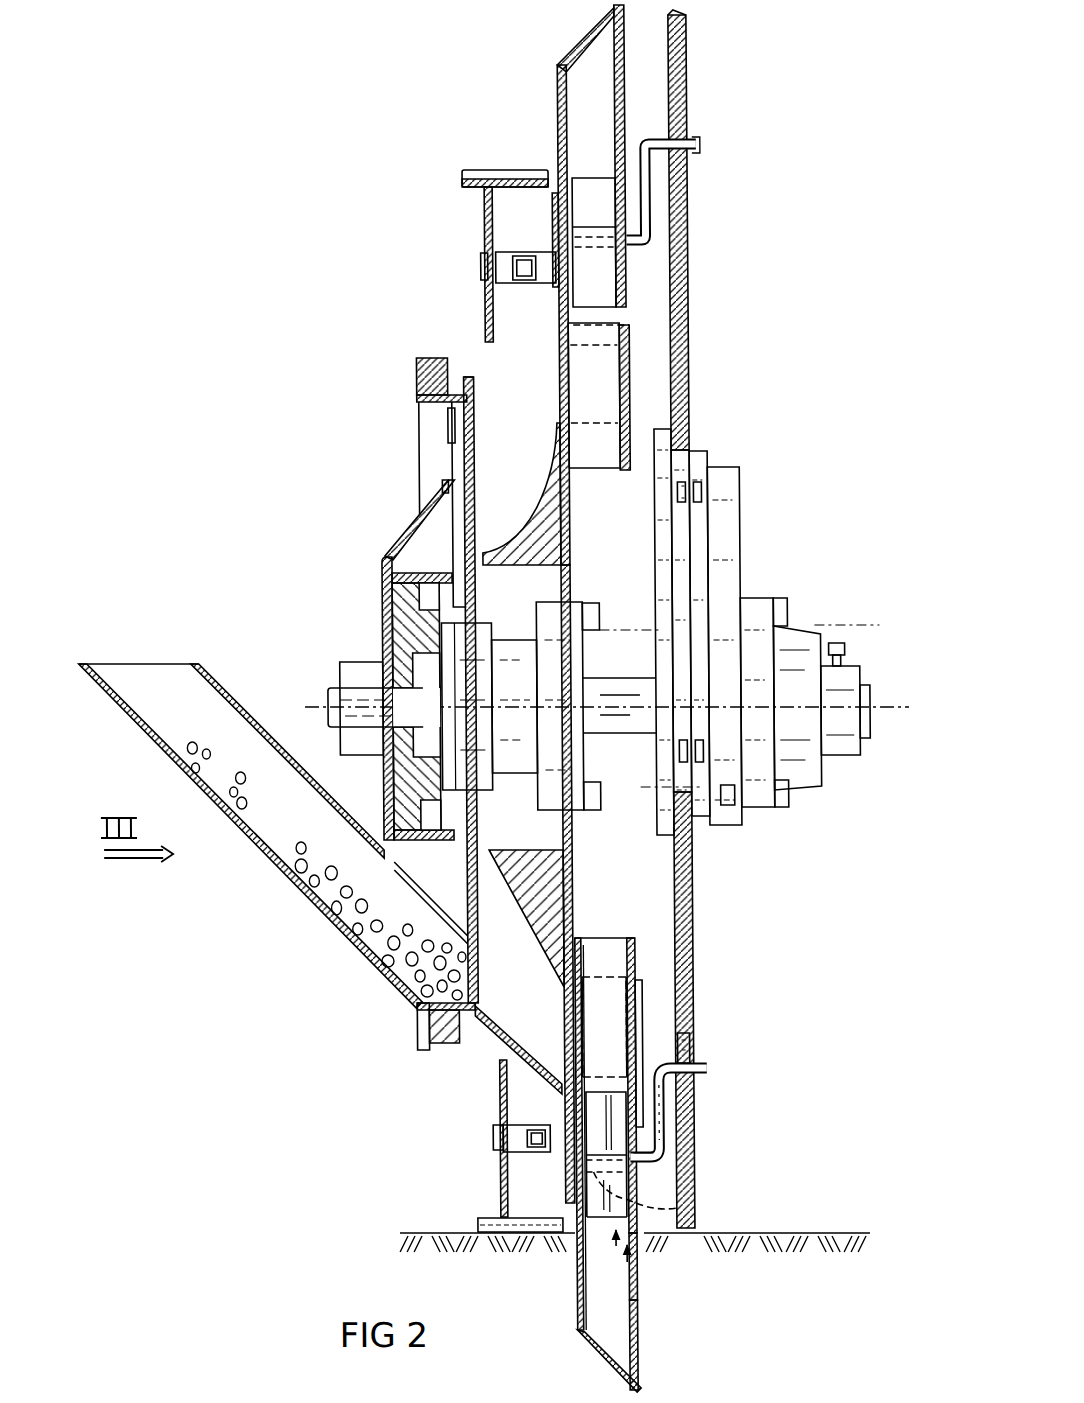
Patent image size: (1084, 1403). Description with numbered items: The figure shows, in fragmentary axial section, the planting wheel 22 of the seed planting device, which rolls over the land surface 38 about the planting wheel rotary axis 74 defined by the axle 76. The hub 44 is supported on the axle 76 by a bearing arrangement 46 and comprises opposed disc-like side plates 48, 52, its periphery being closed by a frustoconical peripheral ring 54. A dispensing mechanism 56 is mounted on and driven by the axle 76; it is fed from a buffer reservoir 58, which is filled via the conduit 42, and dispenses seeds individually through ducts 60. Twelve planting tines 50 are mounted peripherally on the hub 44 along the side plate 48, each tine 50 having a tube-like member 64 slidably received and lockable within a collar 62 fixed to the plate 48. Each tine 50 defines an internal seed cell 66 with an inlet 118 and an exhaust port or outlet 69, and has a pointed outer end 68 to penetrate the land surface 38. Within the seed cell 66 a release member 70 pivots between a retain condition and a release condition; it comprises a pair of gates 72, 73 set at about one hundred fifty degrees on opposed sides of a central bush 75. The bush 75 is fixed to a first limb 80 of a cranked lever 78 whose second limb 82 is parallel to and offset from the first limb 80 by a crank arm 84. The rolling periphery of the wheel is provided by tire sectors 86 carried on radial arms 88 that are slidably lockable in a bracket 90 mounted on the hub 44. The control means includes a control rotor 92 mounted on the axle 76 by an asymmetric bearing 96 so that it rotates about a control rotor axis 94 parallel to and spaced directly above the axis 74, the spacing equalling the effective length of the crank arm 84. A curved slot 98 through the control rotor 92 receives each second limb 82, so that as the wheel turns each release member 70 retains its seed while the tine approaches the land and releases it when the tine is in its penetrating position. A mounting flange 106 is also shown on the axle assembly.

The planting wheel 22 is at (774, 230).
The land surface 38 is at (790, 1240).
The conduit 42 is at (309, 891).
The hub 44 is at (612, 864).
The bearing arrangement 46 is at (613, 607).
The side plate 48 is at (568, 486).
The planting tine 50 is at (632, 1145).
The side plate 52 is at (481, 972).
The frustoconical peripheral ring 54 is at (495, 1043).
The dispensing mechanism 56 is at (374, 586).
The buffer reservoir 58 is at (273, 799).
The duct 60 is at (544, 912).
The collar 62 is at (637, 1005).
The tube-like member 64 is at (704, 1119).
The seed cell 66 is at (633, 1257).
The pointed outer end 68 is at (596, 1360).
The exhaust port or outlet 69 is at (648, 1327).
The release member 70 is at (667, 1141).
The gate 72 is at (600, 1217).
The gate 73 is at (606, 1090).
The planting wheel rotary axis 74 is at (891, 696).
The central bush 75 is at (586, 1187).
The axle 76 is at (622, 690).
The cranked lever 78 is at (679, 1096).
The first limb 80 is at (643, 1207).
The second limb 82 is at (707, 1067).
The crank arm 84 is at (645, 1125).
The tire sector 86 is at (517, 1237).
The radial arm 88 is at (492, 1114).
The bracket 90 is at (513, 1123).
The control rotor 92 is at (683, 935).
The control rotor axis 94 is at (831, 629).
The asymmetric bearing 96 is at (722, 764).
The curved slot 98 is at (685, 1027).
The mounting flange 106 is at (647, 492).
The inlet 118 is at (600, 987).